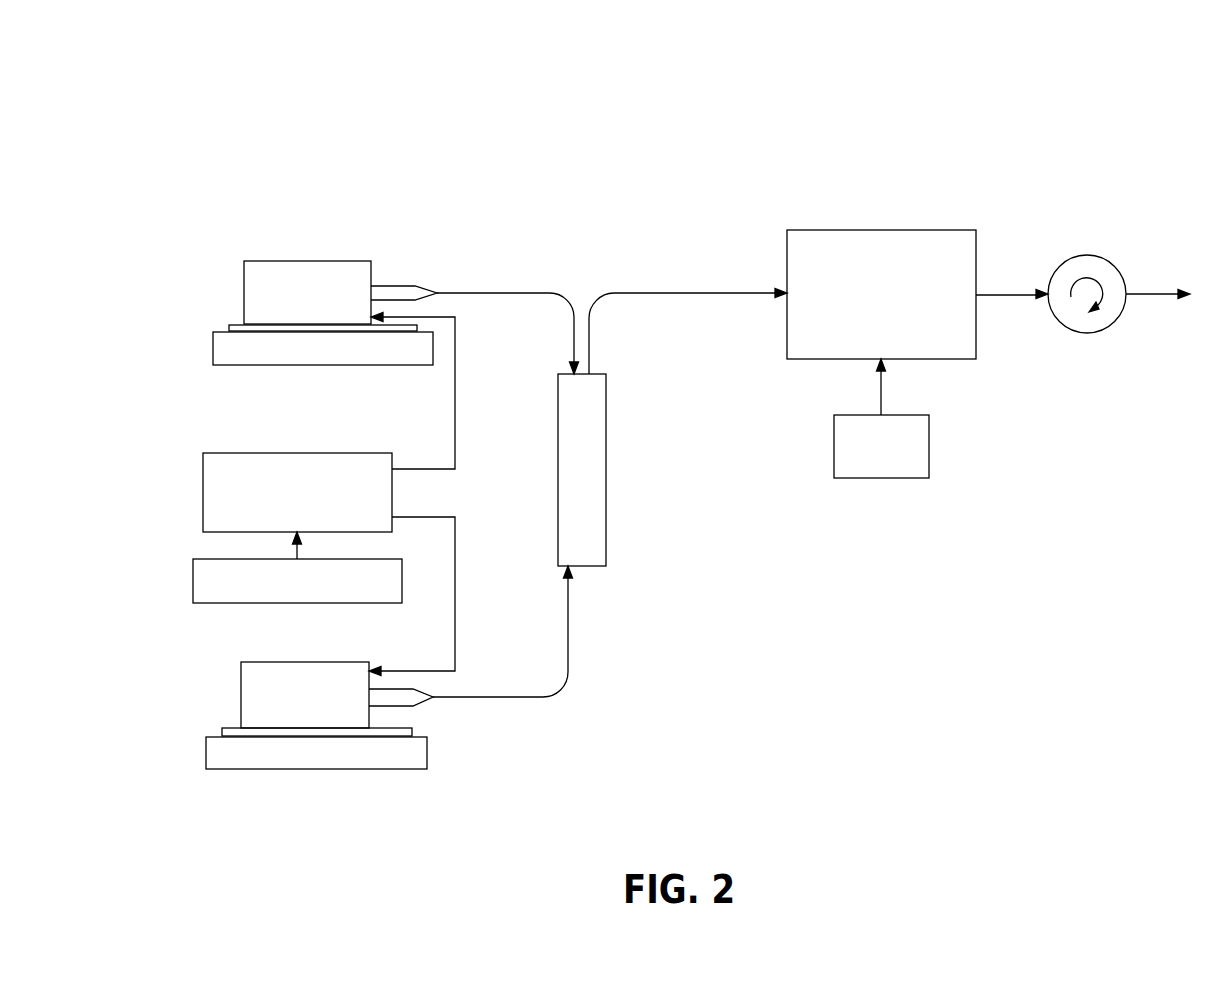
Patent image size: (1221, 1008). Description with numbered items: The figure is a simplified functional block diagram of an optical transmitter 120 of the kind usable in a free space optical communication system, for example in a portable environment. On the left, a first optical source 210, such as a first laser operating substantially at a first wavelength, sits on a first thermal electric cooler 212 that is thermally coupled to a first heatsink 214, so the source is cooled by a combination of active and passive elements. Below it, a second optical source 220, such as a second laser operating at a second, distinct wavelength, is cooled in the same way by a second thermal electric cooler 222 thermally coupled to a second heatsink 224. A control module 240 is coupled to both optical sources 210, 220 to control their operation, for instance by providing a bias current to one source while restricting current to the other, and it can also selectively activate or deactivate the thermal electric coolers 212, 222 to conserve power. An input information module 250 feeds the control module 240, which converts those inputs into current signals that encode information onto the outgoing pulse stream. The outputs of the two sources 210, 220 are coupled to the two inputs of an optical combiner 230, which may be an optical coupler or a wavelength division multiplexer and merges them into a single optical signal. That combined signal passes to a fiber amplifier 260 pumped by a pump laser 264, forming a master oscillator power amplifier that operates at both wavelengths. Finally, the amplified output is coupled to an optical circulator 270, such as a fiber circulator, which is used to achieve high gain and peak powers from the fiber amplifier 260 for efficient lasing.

The optical transmitter 120 is at (1009, 51).
The first optical source 210 is at (308, 261).
The first thermal electric cooler 212 is at (228, 328).
The first heatsink 214 is at (283, 365).
The second optical source 220 is at (305, 662).
The second thermal electric cooler 222 is at (222, 732).
The second heatsink 224 is at (276, 769).
The optical combiner 230 is at (558, 438).
The control module 240 is at (313, 453).
The input information module 250 is at (192, 592).
The fiber amplifier 260 is at (874, 230).
The pump laser 264 is at (897, 478).
The optical circulator 270 is at (1098, 253).